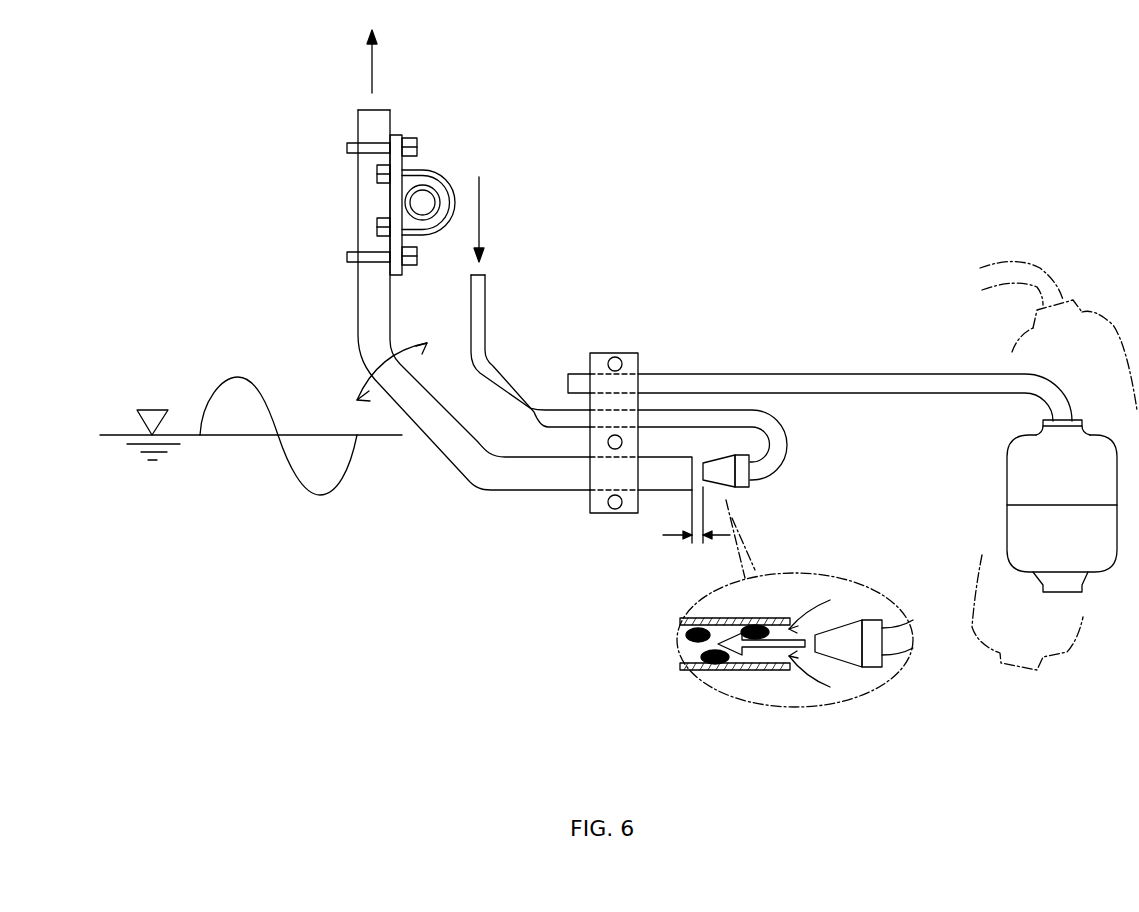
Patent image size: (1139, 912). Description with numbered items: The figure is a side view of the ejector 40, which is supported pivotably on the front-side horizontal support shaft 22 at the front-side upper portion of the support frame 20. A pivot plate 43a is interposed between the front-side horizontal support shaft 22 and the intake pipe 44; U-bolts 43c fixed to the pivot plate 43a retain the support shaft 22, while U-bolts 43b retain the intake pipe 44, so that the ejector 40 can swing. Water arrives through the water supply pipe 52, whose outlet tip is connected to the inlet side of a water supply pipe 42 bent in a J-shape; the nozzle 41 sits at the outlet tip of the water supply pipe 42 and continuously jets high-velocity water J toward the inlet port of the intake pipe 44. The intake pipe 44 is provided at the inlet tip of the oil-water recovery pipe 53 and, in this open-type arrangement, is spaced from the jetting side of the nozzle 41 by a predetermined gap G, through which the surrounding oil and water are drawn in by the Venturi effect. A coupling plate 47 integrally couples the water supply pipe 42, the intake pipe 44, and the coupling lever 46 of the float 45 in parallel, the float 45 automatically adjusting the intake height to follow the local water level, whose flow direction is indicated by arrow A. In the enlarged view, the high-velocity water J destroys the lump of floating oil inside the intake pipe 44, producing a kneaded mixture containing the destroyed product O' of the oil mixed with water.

The ejector 40 is at (780, 160).
The nozzle 41 is at (745, 488).
The water supply pipe 42 is at (497, 368).
The pivot plate 43a is at (395, 134).
The U-bolts 43b is at (353, 262).
The U-bolts 43c is at (437, 236).
The intake pipe 44 is at (553, 492).
The float 45 is at (1007, 493).
The coupling lever 46 is at (797, 373).
The coupling plate 47 is at (630, 352).
The water supply pipe 52 is at (479, 205).
The oil-water recovery pipe 53 is at (372, 62).
The front-side horizontal support shaft 22 is at (472, 172).
The support frame 20 is at (438, 182).
The water flow direction A is at (258, 490).
The predetermined gap G is at (696, 529).
The high-velocity water J is at (753, 660).
The destroyed product of the floating oil O' is at (631, 637).